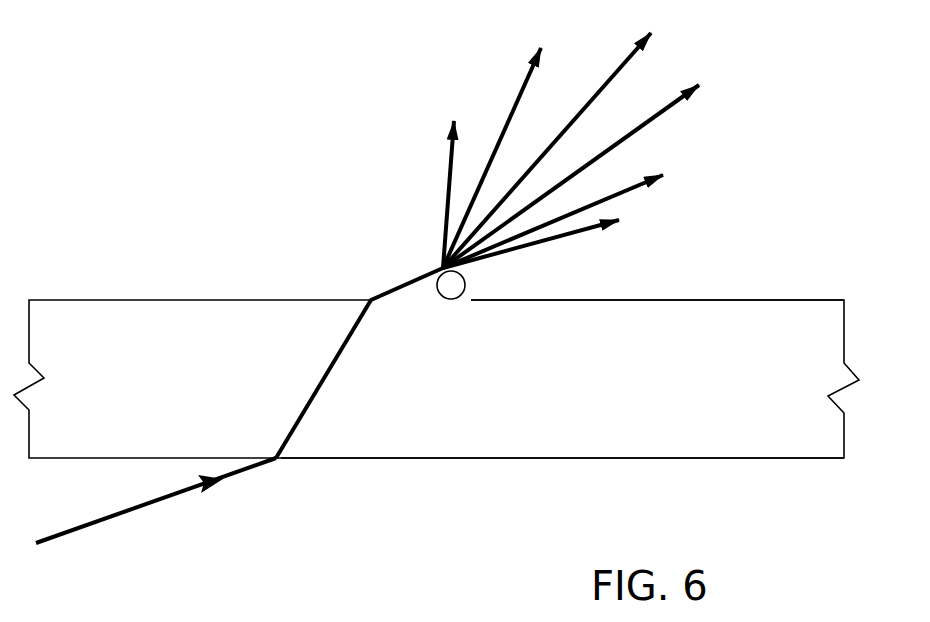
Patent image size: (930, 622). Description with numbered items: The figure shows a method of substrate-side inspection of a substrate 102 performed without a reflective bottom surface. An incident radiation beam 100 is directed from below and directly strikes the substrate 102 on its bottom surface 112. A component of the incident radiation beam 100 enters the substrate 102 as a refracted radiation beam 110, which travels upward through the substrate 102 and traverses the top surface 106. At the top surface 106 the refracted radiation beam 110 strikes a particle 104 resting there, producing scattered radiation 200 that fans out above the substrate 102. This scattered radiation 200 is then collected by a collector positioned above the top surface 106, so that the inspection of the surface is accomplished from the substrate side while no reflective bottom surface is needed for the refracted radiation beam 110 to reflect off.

The incident radiation beam 100 is at (92, 523).
The substrate 102 is at (624, 365).
The particle 104 is at (465, 281).
The top surface 106 is at (727, 297).
The refracted radiation beam 110 is at (330, 367).
The bottom surface 112 is at (427, 457).
The scattered radiation 200 is at (600, 216).